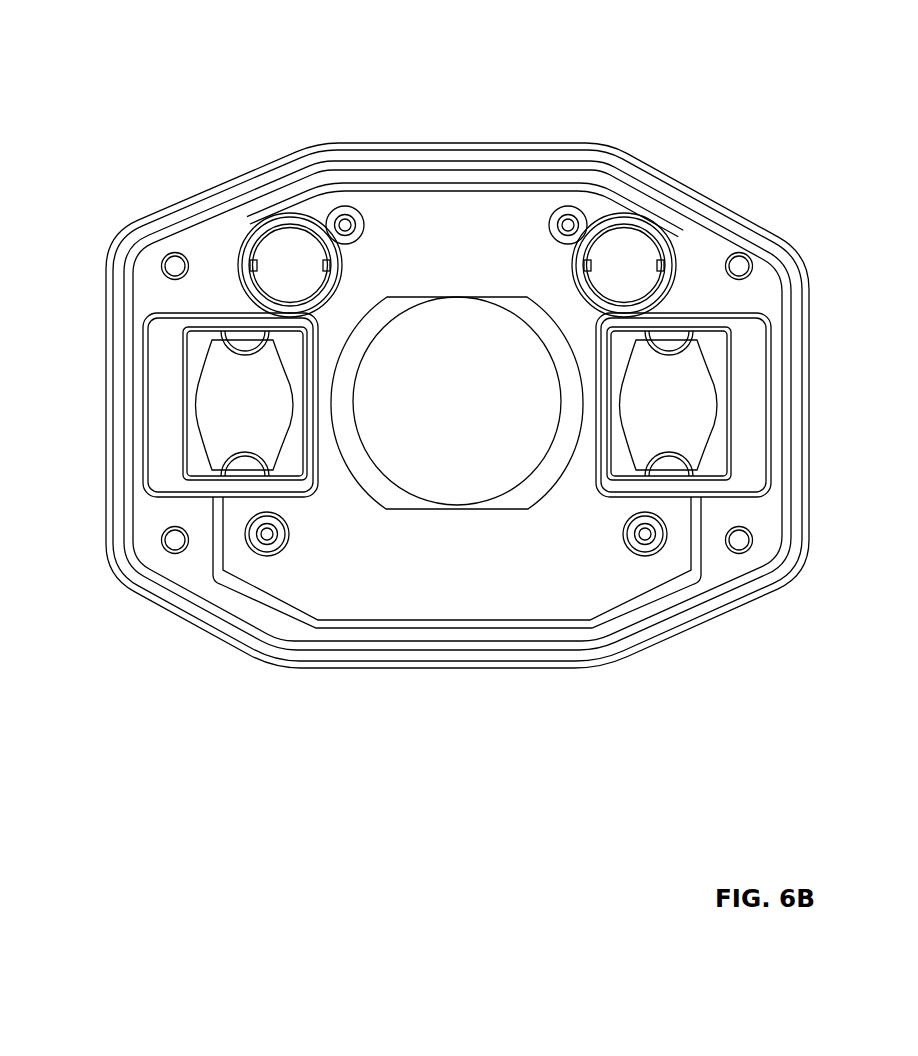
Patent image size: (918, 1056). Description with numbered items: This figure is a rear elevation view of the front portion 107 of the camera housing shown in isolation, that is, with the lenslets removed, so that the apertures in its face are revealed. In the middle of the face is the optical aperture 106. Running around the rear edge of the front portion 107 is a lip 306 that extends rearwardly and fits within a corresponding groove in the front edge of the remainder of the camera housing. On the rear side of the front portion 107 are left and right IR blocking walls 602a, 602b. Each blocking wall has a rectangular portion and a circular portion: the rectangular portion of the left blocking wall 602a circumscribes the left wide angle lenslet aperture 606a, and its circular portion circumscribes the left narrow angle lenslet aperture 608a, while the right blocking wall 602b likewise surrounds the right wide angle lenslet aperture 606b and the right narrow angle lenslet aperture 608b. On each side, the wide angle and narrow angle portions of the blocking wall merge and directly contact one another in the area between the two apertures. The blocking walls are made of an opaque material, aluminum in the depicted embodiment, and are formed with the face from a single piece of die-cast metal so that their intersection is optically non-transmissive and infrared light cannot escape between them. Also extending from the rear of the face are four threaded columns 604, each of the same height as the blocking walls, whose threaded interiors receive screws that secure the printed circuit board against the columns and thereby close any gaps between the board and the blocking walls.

The front portion 107 is at (297, 59).
The lip 306 is at (265, 184).
The threaded columns 604 is at (352, 212).
The left wide angle lenslet aperture 606a is at (623, 263).
The right wide angle lenslet aperture 606b is at (285, 262).
The left narrow angle lenslet aperture 608a is at (669, 403).
The right narrow angle lenslet aperture 608b is at (245, 403).
The left IR blocking wall 602a is at (745, 448).
The right IR blocking wall 602b is at (170, 448).
The optical aperture 106 is at (457, 403).